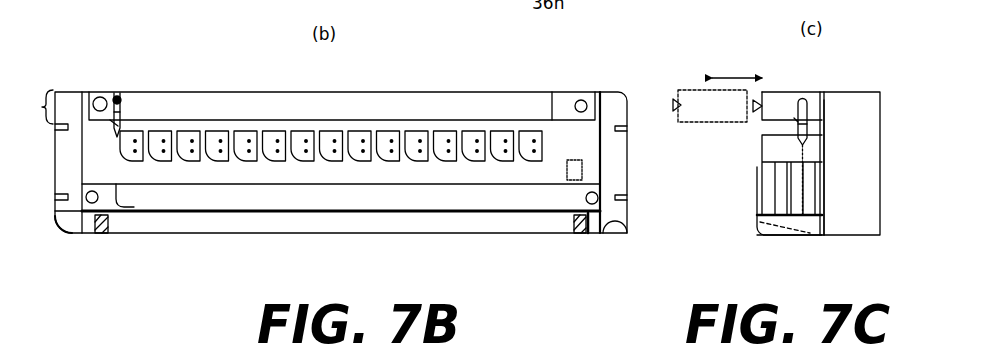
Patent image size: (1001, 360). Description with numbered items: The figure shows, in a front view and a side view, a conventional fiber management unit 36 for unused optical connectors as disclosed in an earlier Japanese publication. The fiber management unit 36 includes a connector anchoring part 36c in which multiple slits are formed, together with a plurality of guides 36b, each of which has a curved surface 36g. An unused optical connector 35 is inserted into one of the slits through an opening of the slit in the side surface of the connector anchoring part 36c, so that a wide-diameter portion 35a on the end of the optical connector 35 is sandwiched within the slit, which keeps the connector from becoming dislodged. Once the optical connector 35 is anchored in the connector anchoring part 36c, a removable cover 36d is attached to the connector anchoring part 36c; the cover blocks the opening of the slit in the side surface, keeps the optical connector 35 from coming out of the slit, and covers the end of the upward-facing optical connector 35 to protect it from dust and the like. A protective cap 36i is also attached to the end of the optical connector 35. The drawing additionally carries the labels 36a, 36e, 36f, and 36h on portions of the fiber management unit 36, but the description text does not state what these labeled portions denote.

In FIG. 7B, the optical connector 35 is at (113, 130).
In FIG. 7C, the optical connector 35 is at (818, 124).
In FIG. 7B, the wide-diameter portion 35a is at (114, 124).
In FIG. 7C, the wide-diameter portion 35a is at (797, 120).
In FIG. 7B, the fiber management unit 36 is at (119, 240).
In FIG. 7C, the fiber management unit 36 is at (876, 89).
In FIG. 7B, the frame bottom corner 36a is at (60, 217).
In FIG. 7B, the guide 36b is at (162, 131).
In FIG. 7C, the guide 36b is at (761, 143).
In FIG. 7B, the connector anchoring part 36c is at (30, 107).
In FIG. 7C, the connector anchoring part 36c is at (825, 108).
In FIG. 7B, the removable cover 36d is at (334, 106).
In FIG. 7C, the removable cover 36d is at (795, 91).
In FIG. 7B, the bottom dome 36e is at (627, 208).
In FIG. 7B, the support block 36f is at (574, 160).
In FIG. 7C, the support block 36f is at (757, 167).
In FIG. 7B, the curved surface 36g is at (182, 163).
In FIG. 7C, the tab 36h is at (672, 103).
In FIG. 7B, the protective cap 36i is at (117, 93).
In FIG. 7C, the protective cap 36i is at (803, 99).